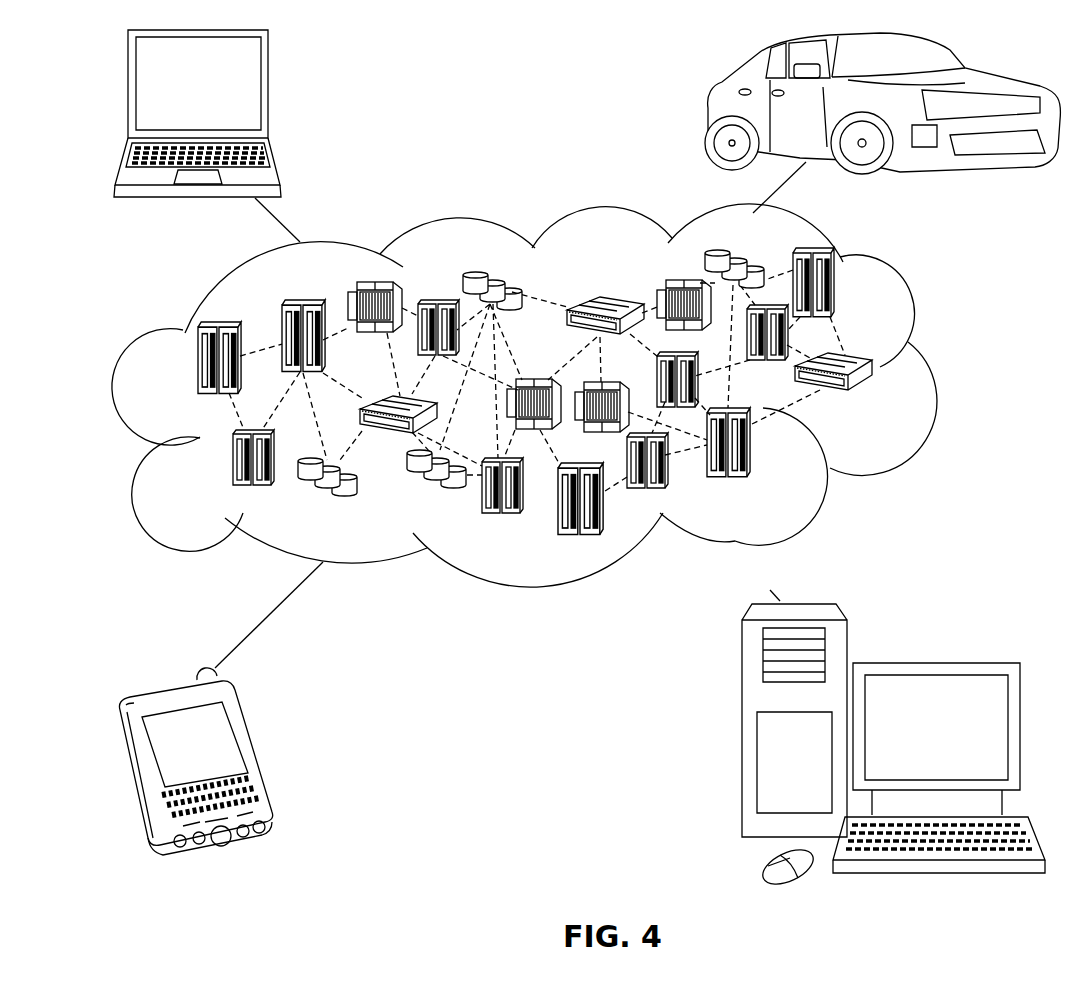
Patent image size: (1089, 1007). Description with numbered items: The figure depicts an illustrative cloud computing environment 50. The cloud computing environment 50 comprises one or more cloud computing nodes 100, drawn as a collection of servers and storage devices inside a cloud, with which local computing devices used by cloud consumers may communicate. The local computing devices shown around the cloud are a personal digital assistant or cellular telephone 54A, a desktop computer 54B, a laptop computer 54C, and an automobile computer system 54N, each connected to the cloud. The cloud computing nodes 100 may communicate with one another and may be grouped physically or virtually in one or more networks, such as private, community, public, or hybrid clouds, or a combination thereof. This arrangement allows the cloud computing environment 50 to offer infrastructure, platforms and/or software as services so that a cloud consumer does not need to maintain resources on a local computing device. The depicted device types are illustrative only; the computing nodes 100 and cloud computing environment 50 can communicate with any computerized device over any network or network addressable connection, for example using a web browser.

The cloud computing environment 50 is at (935, 370).
The cloud computing nodes 100 is at (876, 398).
The personal digital assistant or cellular telephone 54A is at (258, 757).
The desktop computer 54B is at (932, 662).
The laptop computer 54C is at (268, 93).
The automobile computer system 54N is at (712, 108).